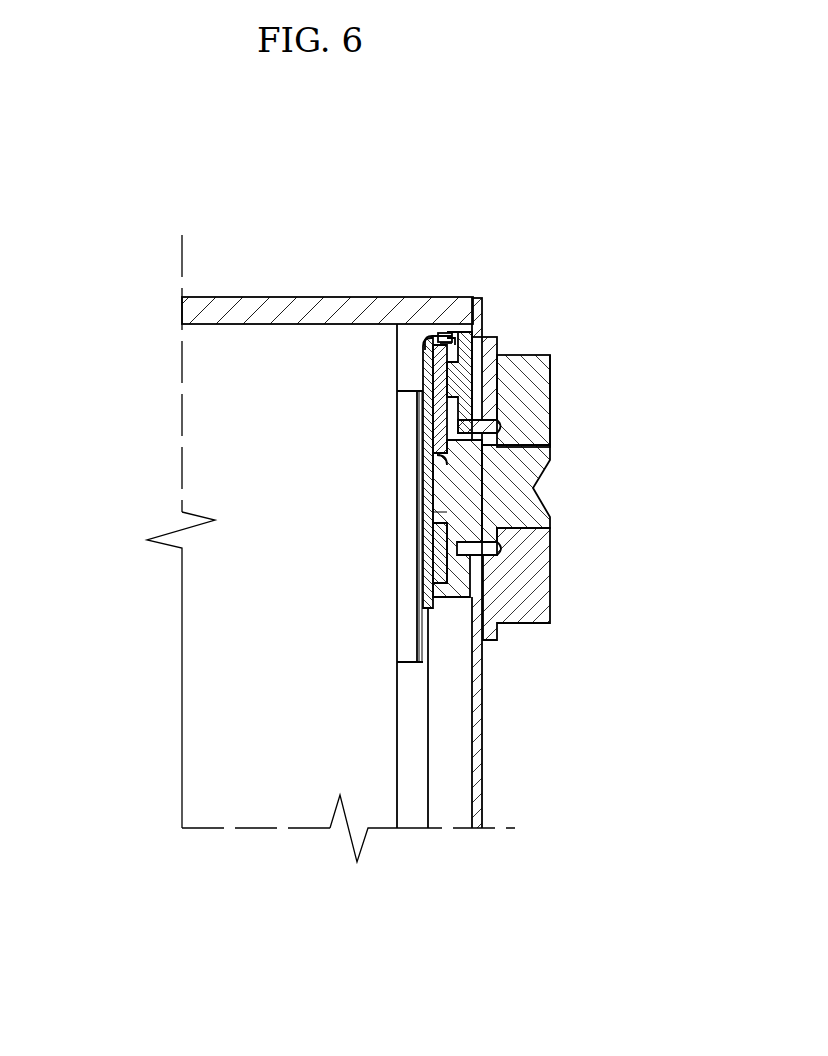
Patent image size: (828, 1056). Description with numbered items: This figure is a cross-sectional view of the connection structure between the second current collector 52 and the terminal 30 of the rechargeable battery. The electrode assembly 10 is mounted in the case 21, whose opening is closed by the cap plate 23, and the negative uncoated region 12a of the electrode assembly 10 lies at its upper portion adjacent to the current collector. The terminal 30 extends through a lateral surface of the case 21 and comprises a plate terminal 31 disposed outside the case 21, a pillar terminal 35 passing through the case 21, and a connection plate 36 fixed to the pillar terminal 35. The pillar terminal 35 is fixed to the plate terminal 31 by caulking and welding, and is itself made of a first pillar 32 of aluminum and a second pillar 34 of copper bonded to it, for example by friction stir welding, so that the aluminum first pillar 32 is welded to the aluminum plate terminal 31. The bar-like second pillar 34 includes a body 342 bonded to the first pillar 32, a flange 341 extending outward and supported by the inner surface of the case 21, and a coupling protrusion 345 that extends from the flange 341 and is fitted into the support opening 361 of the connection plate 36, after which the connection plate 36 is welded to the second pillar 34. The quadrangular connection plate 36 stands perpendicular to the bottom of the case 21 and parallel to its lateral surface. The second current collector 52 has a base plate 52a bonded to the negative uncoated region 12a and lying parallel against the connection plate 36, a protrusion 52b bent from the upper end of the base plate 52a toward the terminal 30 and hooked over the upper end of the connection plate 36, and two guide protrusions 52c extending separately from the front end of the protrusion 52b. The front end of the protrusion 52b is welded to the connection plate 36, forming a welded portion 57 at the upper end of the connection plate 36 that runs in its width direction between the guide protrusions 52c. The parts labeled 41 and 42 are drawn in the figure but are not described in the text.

The electrode assembly 10 is at (270, 791).
The negative uncoated region 12a is at (407, 640).
The case 21 is at (485, 690).
The cap plate 23 is at (293, 307).
The terminal 30 is at (560, 370).
The plate terminal 31 is at (525, 396).
The first pillar 32 is at (527, 470).
The second pillar 34 is at (486, 498).
The flange 341 is at (452, 575).
The body 342 is at (460, 517).
The coupling protrusion 345 is at (440, 513).
The pillar terminal 35 is at (637, 443).
The connection plate 36 is at (442, 557).
The support opening 361 is at (440, 466).
The lower bracket 41 is at (490, 597).
The flange 42 is at (466, 380).
The second current collector 52 is at (418, 340).
The base plate 52a is at (430, 434).
The protrusion 52b is at (443, 333).
The guide protrusions 52c is at (450, 335).
The welded portion 57 is at (450, 343).